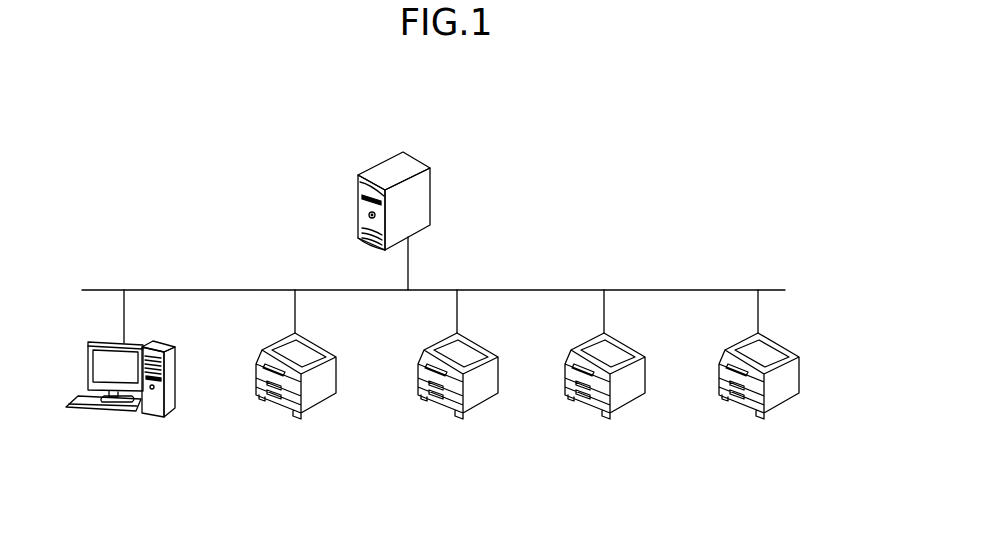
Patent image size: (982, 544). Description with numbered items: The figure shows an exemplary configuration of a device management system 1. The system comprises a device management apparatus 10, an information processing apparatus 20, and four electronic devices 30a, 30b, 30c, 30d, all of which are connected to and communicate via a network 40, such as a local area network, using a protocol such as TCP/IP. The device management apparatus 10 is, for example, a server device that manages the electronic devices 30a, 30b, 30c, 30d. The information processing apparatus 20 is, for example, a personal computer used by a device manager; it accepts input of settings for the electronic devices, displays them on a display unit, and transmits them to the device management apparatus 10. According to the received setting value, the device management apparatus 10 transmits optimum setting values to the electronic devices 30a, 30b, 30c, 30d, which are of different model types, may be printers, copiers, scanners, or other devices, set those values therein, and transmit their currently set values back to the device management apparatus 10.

The device management system 1 is at (538, 148).
The device management apparatus 10 is at (413, 155).
The information processing apparatus 20 is at (176, 344).
The electronic device 30a is at (321, 343).
The electronic device 30b is at (483, 343).
The electronic device 30c is at (630, 343).
The electronic device 30d is at (782, 343).
The network 40 is at (192, 290).